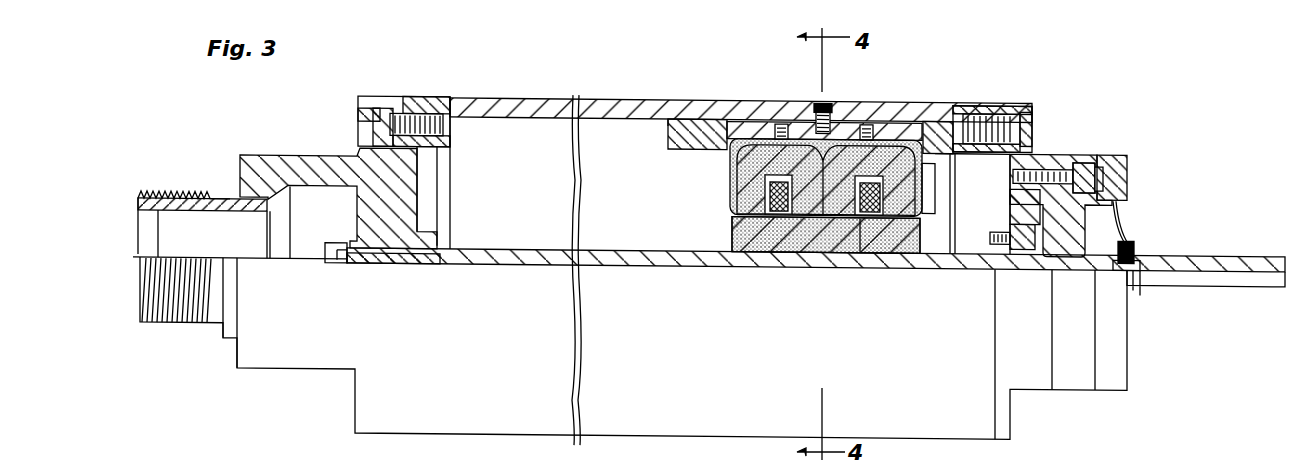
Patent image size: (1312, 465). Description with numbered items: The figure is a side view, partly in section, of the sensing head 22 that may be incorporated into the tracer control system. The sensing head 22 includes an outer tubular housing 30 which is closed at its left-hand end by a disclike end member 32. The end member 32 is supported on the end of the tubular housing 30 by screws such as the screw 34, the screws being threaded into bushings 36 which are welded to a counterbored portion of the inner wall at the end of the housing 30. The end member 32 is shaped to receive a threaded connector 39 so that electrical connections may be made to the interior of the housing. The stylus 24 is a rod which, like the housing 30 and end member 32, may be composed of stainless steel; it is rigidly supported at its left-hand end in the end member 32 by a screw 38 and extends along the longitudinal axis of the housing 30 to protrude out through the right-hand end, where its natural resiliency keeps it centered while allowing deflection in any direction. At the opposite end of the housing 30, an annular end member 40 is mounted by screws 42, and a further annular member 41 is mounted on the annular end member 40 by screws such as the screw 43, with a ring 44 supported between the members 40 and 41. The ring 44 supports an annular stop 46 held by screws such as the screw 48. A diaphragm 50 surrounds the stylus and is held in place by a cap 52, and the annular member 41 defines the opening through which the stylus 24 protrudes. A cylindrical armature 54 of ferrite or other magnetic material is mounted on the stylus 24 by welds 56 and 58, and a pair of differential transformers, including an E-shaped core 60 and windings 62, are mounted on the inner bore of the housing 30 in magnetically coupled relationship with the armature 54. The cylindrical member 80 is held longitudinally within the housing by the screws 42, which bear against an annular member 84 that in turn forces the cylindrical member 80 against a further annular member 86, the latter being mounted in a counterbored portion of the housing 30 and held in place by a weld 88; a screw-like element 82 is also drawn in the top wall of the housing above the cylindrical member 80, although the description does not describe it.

The sensing head 22 is at (540, 143).
The stylus 24 is at (1170, 262).
The outer tubular housing 30 is at (505, 112).
The end member 32 is at (330, 178).
The screw 34 is at (368, 122).
The bushing 36 is at (415, 105).
The screw 38 is at (325, 255).
The threaded connector 39 is at (183, 203).
The annular end member 40 is at (1063, 152).
The annular member 41 is at (1067, 160).
The screw 42 is at (1030, 148).
The screw 43 is at (1092, 160).
The ring 44 is at (1012, 205).
The annular stop 46 is at (1008, 222).
The screw 48 is at (990, 236).
The diaphragm 50 is at (1130, 232).
The cap 52 is at (1113, 176).
The cylindrical armature 54 is at (880, 235).
The weld 56 is at (730, 252).
The weld 58 is at (922, 248).
The E-shaped core 60 is at (838, 165).
The windings 62 is at (882, 190).
The cylindrical member 80 is at (750, 126).
The set screw 82 is at (822, 104).
The annular member 84 is at (935, 130).
The annular member 86 is at (705, 118).
The weld 88 is at (668, 121).